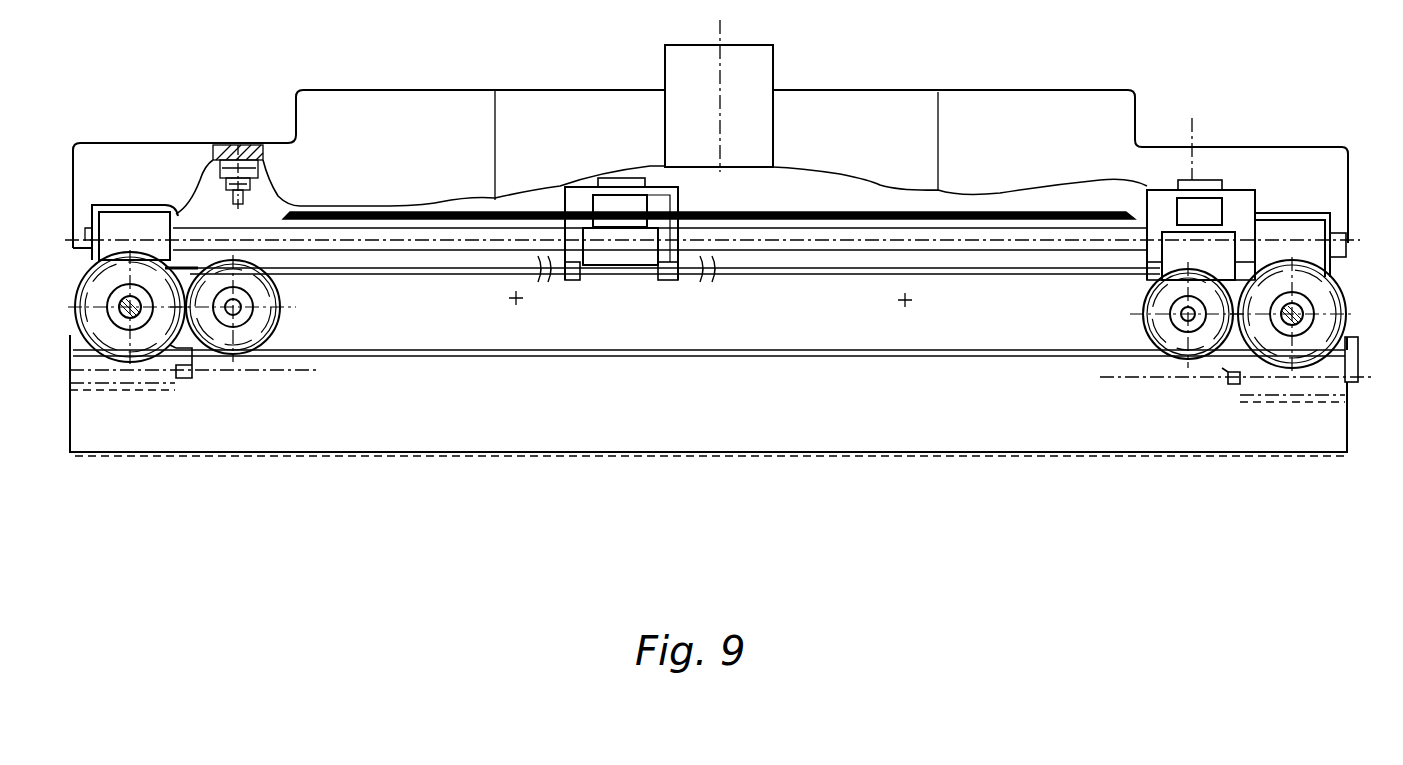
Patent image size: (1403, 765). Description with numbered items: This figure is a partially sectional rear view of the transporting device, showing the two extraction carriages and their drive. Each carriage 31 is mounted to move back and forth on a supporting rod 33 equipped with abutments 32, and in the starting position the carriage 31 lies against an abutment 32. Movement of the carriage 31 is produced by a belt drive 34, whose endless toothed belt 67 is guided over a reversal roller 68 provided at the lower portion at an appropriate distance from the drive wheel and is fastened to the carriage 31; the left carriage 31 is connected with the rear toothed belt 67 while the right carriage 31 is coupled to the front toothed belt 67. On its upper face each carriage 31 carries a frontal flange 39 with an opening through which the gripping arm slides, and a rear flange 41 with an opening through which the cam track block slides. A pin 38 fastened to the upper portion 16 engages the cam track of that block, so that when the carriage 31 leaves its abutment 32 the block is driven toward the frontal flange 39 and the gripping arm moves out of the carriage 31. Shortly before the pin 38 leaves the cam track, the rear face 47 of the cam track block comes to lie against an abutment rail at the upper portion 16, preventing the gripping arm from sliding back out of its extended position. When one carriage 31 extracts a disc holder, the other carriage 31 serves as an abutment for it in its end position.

The upper portion 16 is at (183, 143).
The carriage 31 is at (672, 283).
The abutment 32 is at (127, 224).
The supporting rod 33 is at (413, 240).
The belt drive 34 is at (199, 385).
The pin 38 is at (250, 205).
The frontal flange 39 is at (620, 178).
The rear flange 41 is at (678, 199).
The rear face 47 is at (600, 205).
The toothed belt 67 is at (163, 356).
The reversal roller 68 is at (280, 328).